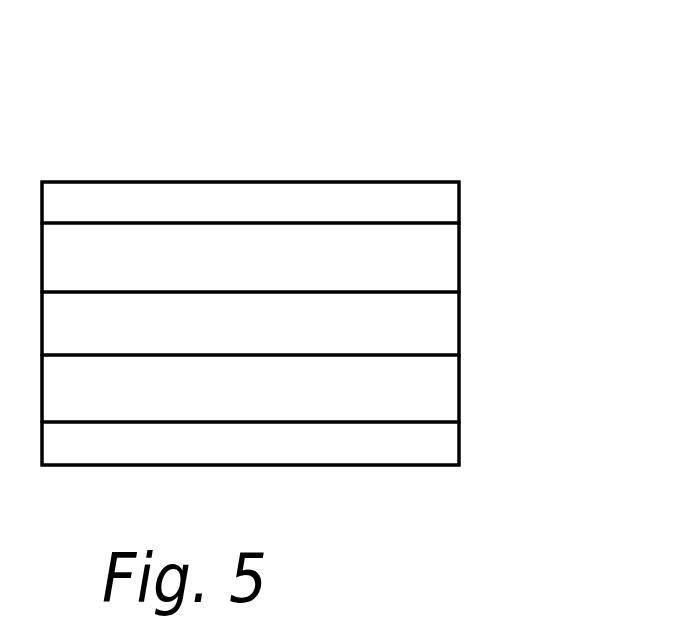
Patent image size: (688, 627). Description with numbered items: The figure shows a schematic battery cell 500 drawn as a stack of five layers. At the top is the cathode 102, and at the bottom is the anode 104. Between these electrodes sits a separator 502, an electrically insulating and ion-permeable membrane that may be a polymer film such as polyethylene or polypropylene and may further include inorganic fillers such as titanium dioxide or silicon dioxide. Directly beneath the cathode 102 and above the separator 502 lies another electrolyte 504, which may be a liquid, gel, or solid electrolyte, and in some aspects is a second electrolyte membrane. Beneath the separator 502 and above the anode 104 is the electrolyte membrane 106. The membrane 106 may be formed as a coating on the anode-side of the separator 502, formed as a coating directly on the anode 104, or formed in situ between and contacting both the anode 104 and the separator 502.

The battery cell 500 is at (393, 90).
The cathode 102 is at (449, 202).
The electrolyte 504 is at (449, 256).
The separator 502 is at (449, 322).
The electrolyte membrane 106 is at (449, 386).
The anode 104 is at (449, 443).